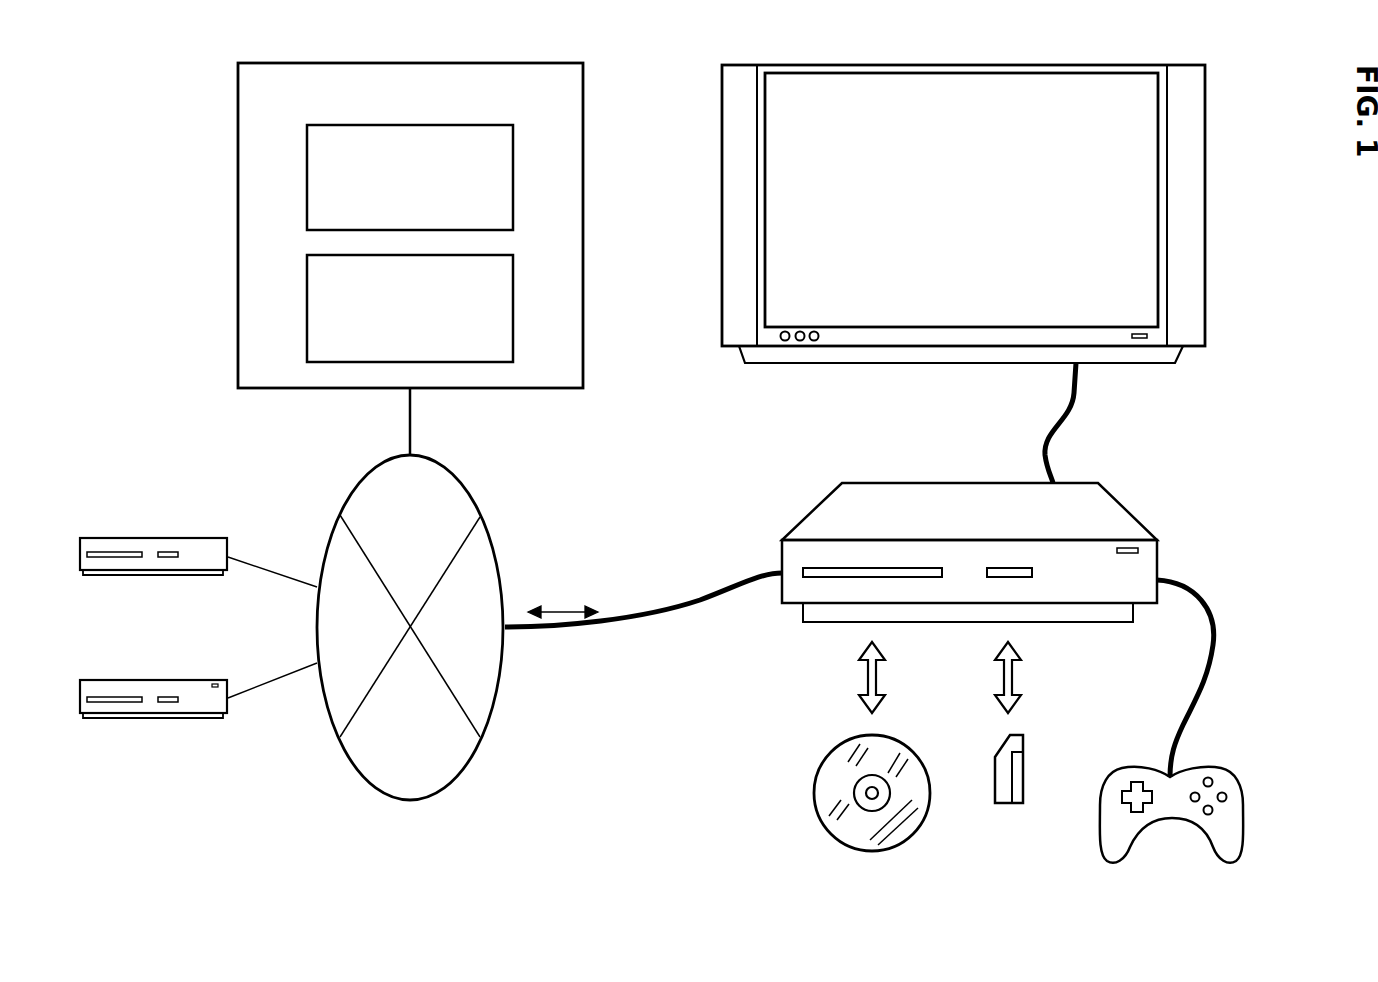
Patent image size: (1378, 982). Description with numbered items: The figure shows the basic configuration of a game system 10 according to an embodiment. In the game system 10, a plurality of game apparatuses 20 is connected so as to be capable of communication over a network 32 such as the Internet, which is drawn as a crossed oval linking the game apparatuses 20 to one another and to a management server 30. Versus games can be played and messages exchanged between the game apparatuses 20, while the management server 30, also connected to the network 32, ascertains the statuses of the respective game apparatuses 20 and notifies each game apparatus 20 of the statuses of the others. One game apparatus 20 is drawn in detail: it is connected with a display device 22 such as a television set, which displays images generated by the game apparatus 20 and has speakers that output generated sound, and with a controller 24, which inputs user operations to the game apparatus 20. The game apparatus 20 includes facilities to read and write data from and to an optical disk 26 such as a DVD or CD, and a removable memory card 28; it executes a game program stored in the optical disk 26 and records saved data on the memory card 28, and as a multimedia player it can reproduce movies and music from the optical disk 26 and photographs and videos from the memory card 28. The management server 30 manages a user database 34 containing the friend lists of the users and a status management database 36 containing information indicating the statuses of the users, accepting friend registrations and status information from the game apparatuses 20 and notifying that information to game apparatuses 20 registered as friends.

The game system 10 is at (1221, 440).
The game apparatus 20 is at (1132, 508).
The display device 22 is at (1205, 203).
The controller 24 is at (1243, 847).
The optical disk 26 is at (870, 853).
The memory card 28 is at (1010, 805).
The management server 30 is at (583, 90).
The network 32 is at (407, 800).
The user database 34 is at (513, 177).
The status management database 36 is at (513, 305).